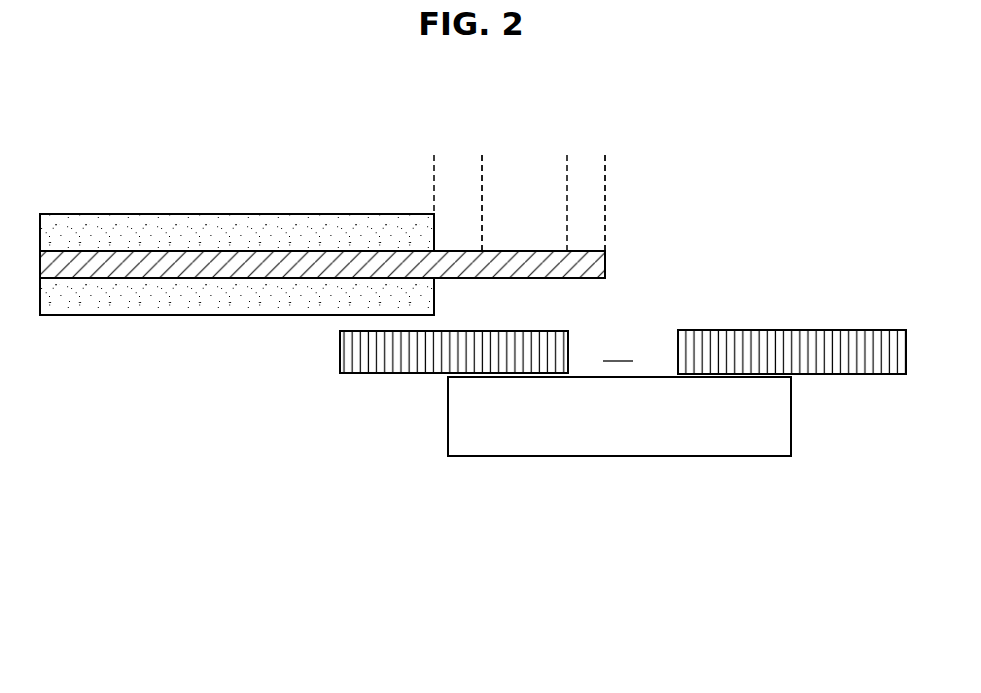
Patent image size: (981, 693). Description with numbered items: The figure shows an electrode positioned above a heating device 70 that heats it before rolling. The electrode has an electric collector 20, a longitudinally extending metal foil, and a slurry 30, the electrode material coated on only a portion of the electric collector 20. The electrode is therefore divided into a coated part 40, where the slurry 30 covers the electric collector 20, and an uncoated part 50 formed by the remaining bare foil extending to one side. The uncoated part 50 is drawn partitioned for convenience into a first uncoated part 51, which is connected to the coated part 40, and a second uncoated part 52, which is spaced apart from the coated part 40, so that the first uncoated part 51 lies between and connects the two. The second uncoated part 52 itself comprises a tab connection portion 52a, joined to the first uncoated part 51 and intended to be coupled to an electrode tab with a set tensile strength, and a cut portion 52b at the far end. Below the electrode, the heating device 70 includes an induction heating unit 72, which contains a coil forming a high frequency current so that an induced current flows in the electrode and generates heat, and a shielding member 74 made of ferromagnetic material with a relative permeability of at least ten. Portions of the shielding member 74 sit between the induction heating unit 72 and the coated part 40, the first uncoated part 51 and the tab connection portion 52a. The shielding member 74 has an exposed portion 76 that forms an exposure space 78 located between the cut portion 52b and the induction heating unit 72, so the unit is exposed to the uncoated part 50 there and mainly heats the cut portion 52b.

The electric collector 20 is at (166, 265).
The slurry 30 is at (227, 297).
The coated part 40 is at (321, 250).
The uncoated part 50 is at (258, 495).
The first uncoated part 51 is at (482, 161).
The second uncoated part 52 is at (382, 495).
The tab connection portion 52a is at (567, 161).
The cut portion 52b is at (605, 161).
The heating device 70 is at (584, 357).
The induction heating unit 72 is at (782, 409).
The shielding member 74 is at (355, 350).
The exposed portion 76 is at (678, 345).
The exposure space 78 is at (619, 358).